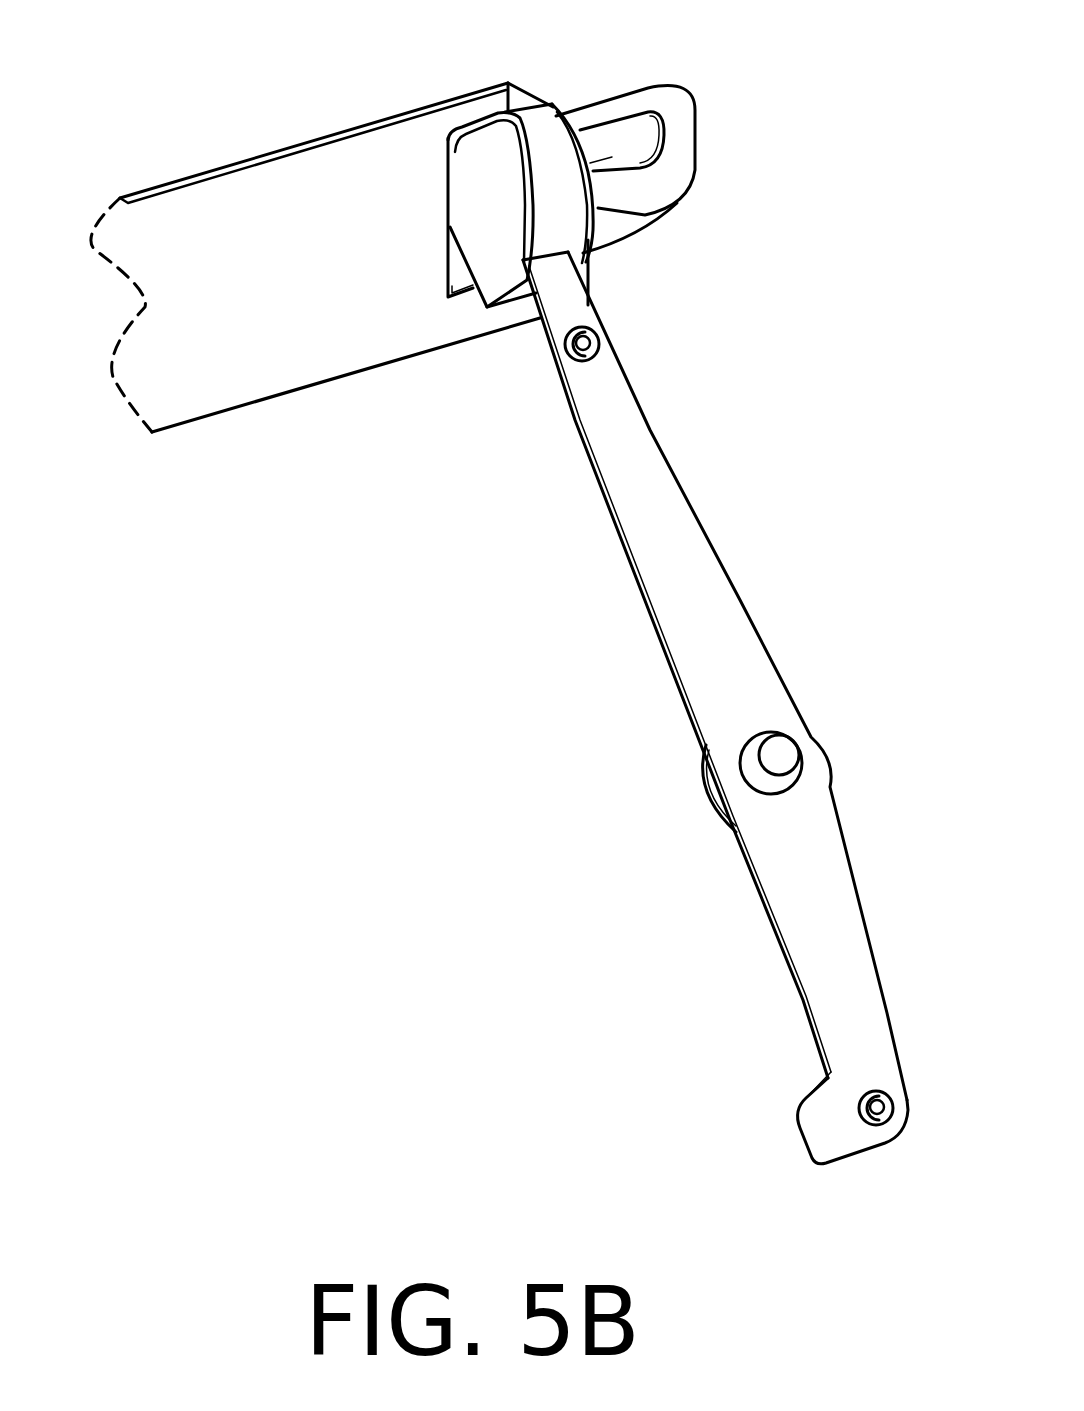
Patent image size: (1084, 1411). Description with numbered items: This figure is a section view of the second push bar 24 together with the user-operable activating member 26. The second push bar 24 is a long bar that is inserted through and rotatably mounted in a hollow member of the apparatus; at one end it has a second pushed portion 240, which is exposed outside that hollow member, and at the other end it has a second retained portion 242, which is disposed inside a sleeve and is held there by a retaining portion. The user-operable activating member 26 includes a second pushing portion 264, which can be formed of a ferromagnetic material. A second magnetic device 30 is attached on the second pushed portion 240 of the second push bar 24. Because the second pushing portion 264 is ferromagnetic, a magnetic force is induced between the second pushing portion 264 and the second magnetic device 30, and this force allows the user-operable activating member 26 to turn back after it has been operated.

The user-operable activating member 26 is at (322, 140).
The second pushed portion 240 is at (483, 234).
The second magnetic device 30 is at (553, 213).
The second pushing portion 264 is at (680, 207).
The second push bar 24 is at (661, 657).
The second retained portion 242 is at (810, 1158).